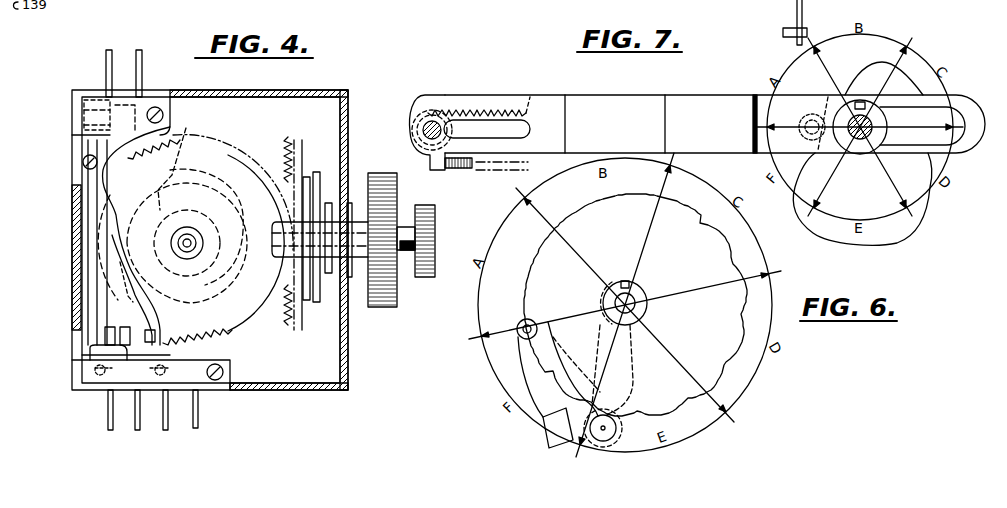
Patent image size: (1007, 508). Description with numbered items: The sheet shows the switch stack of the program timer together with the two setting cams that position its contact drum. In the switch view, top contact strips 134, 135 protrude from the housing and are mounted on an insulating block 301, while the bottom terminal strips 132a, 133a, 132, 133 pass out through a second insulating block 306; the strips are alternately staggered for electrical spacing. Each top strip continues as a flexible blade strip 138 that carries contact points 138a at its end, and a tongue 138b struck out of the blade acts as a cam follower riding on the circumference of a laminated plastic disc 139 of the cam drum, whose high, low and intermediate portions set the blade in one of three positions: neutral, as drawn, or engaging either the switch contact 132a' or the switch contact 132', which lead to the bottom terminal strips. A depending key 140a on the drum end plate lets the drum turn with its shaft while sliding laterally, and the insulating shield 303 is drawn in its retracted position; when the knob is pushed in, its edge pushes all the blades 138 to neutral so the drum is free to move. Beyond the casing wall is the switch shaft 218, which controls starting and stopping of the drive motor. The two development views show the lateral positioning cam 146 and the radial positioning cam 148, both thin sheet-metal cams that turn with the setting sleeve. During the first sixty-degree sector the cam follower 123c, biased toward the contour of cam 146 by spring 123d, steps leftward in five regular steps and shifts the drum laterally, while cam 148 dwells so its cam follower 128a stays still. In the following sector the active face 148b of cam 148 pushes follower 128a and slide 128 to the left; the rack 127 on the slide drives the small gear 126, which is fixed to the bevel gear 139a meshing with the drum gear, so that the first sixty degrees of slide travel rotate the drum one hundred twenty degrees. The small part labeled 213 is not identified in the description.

In FIG. 4, the top contact strip 134 is at (106, 70).
In FIG. 4, the top contact strip 135 is at (165, 68).
In FIG. 4, the insulating block 301 is at (80, 131).
In FIG. 4, the laminated plastic disc 139 is at (186, 130).
In FIG. 4, the insulating shield 303 is at (225, 137).
In FIG. 4, the bevel gear 139a is at (290, 145).
In FIG. 4, the blade strip 138 is at (118, 208).
In FIG. 4, the depending key 140a is at (218, 198).
In FIG. 4, the tongue 138b is at (112, 240).
In FIG. 4, the contact points 138a is at (128, 308).
In FIG. 4, the switch contact 132a' is at (76, 318).
In FIG. 4, the switch contact 132' is at (188, 328).
In FIG. 4, the insulating block 306 is at (95, 352).
In FIG. 4, the terminal strip 132a is at (81, 410).
In FIG. 4, the terminal strip 133a is at (138, 431).
In FIG. 4, the terminal strip 132 is at (181, 419).
In FIG. 4, the terminal strip 133 is at (198, 430).
In FIG. 4, the switch shaft 218 is at (404, 262).
In FIG. 7, the rack 127 is at (530, 108).
In FIG. 7, the slide 128 is at (705, 95).
In FIG. 7, the small gear 126 is at (450, 128).
In FIG. 7, the bracket 213 is at (806, 30).
In FIG. 7, the active face 148b is at (870, 80).
In FIG. 7, the cam follower 128a is at (828, 97).
In FIG. 7, the radial positioning cam 148 is at (923, 206).
In FIG. 6, the lateral positioning cam 146 is at (722, 316).
In FIG. 6, the cam follower 123c is at (518, 334).
In FIG. 6, the spring 123d is at (568, 424).